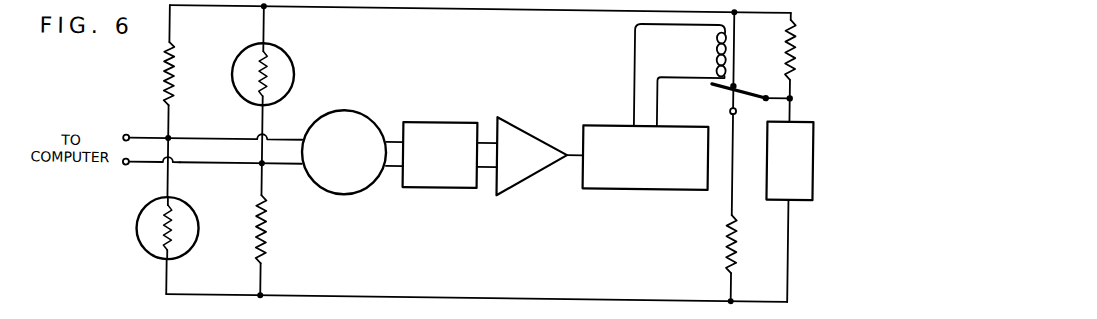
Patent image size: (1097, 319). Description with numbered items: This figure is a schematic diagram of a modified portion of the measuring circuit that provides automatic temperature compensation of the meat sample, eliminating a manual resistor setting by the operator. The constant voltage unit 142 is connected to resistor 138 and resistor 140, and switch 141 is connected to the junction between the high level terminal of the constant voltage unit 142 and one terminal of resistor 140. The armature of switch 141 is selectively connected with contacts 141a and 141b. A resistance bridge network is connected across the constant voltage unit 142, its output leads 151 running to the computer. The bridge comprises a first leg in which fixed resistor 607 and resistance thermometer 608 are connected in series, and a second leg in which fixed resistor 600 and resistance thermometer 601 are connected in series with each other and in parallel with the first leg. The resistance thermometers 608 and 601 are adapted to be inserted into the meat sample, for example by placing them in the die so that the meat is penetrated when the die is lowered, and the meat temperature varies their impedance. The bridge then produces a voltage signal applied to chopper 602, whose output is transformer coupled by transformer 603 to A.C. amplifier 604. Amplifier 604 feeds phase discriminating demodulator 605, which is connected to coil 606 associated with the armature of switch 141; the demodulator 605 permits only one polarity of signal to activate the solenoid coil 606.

The input leads to computer 151 is at (151, 158).
The resistance thermometer 608 is at (163, 76).
The resistance thermometer 601 is at (292, 58).
The fixed resistor 607 is at (138, 232).
The fixed resistor 600 is at (266, 226).
The chopper 602 is at (340, 112).
The transformer 603 is at (436, 131).
The A.C. amplifier 604 is at (513, 136).
The phase discriminating demodulator 605 is at (611, 124).
The solenoid coil 606 is at (714, 46).
The contact 141a is at (735, 82).
The switch 141 is at (739, 89).
The contact 141b is at (729, 108).
The resistor 140 is at (797, 47).
The constant voltage unit 142 is at (801, 118).
The resistor 138 is at (728, 248).